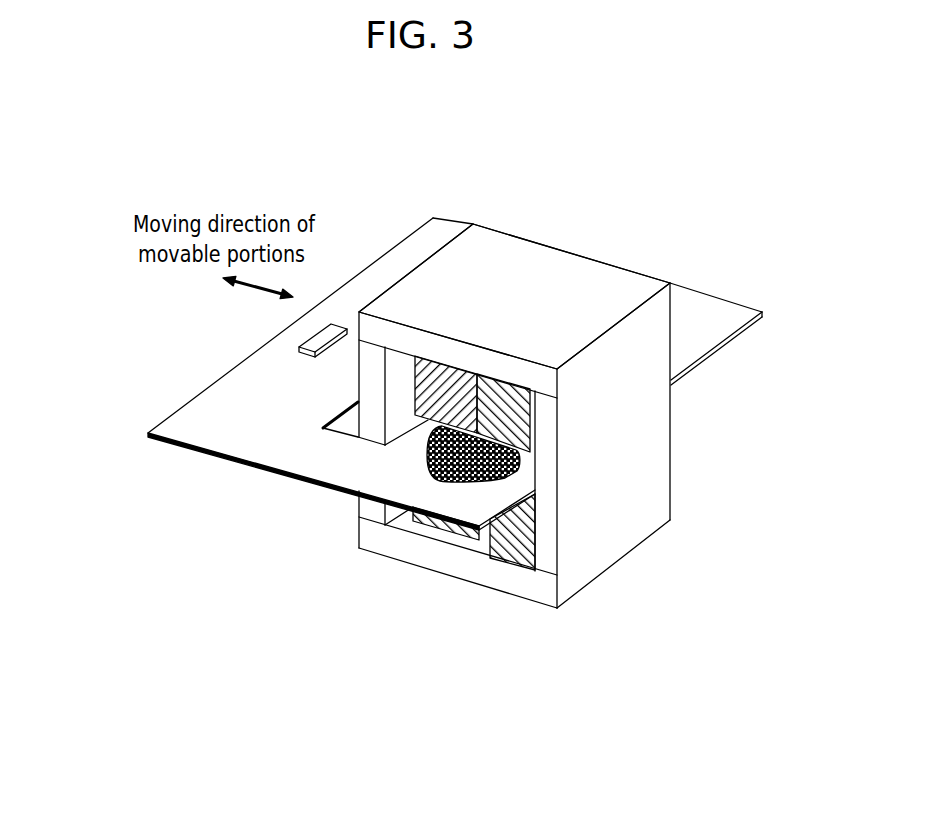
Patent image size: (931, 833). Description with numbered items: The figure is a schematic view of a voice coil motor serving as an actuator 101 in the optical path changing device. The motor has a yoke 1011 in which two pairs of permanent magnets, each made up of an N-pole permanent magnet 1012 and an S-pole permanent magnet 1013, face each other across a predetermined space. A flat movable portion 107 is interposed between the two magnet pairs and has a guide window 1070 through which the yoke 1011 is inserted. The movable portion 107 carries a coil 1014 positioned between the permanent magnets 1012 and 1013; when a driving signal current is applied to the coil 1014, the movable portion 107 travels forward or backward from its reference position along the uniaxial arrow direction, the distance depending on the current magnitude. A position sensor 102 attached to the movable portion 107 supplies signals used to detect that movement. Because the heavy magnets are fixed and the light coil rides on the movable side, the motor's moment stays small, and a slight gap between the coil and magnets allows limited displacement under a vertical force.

The actuator 101 is at (657, 462).
The yoke 1011 is at (482, 247).
The N-pole permanent magnet 1012 is at (535, 493).
The S-pole permanent magnet 1013 is at (497, 417).
The coil 1014 is at (428, 449).
The movable portion 107 is at (413, 233).
The guide window 1070 is at (323, 428).
The position sensor 102 is at (320, 341).